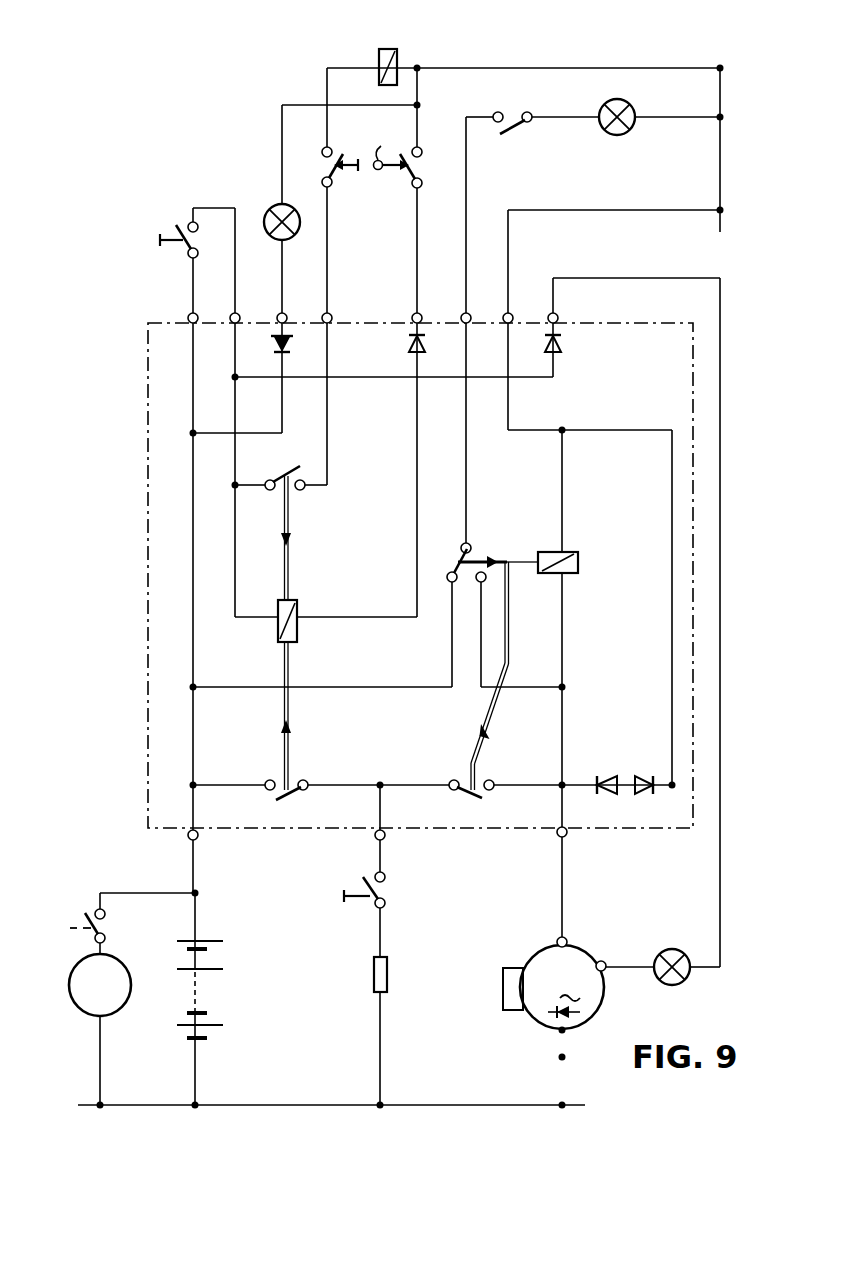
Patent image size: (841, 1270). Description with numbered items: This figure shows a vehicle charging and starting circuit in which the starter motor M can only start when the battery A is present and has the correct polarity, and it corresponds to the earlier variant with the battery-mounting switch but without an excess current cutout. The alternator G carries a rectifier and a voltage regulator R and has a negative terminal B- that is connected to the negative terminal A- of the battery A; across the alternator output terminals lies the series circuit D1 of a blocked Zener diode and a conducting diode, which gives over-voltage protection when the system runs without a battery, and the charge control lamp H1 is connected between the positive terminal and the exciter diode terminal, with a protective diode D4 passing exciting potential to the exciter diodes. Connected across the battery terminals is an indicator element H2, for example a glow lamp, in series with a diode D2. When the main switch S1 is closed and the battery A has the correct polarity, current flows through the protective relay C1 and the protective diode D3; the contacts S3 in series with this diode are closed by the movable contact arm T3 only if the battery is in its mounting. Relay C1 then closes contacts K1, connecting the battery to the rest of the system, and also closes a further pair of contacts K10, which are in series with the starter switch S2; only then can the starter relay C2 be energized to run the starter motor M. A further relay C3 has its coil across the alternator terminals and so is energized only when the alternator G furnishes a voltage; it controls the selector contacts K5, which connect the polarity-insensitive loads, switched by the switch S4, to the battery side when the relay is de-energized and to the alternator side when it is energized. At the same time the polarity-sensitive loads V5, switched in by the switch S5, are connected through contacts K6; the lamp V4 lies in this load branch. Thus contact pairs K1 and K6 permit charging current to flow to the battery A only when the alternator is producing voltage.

The main switch S1 is at (172, 231).
The starter switch S2 is at (342, 175).
The contacts of switch S3/T3 S3 is at (402, 173).
The movable contact arm T3 is at (386, 147).
The switch S4 is at (514, 138).
The switch S5 is at (364, 880).
The charge control lamp H1 is at (672, 954).
The indicator element H2 is at (291, 233).
The lamp V4 is at (633, 107).
The loads V5 is at (365, 974).
The protective relay C1 is at (305, 623).
The starter relay C2 is at (379, 82).
The relay C3 is at (576, 563).
The contacts K1 is at (293, 730).
The selector contacts K5 is at (470, 557).
The contacts K6 is at (483, 776).
The contacts K10 is at (271, 483).
The series circuit D1 is at (656, 764).
The diode D2 is at (269, 345).
The protective diode D3 is at (398, 345).
The protective diode D4 is at (538, 345).
The battery A is at (200, 990).
The negative terminal of the battery A- is at (200, 1103).
The negative terminal B- is at (540, 1059).
The starter motor M is at (109, 997).
The alternator G is at (562, 983).
The voltage regulator R is at (513, 989).